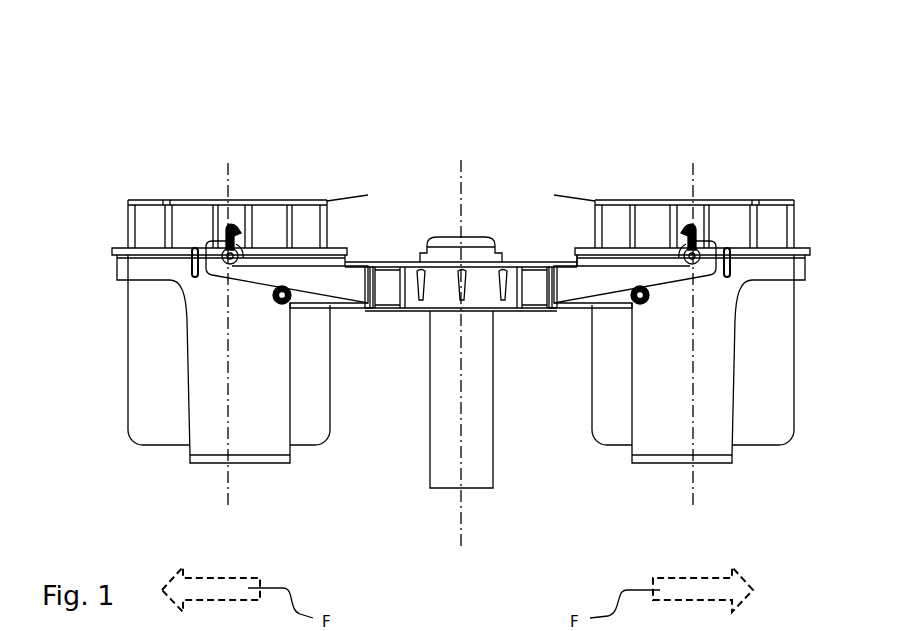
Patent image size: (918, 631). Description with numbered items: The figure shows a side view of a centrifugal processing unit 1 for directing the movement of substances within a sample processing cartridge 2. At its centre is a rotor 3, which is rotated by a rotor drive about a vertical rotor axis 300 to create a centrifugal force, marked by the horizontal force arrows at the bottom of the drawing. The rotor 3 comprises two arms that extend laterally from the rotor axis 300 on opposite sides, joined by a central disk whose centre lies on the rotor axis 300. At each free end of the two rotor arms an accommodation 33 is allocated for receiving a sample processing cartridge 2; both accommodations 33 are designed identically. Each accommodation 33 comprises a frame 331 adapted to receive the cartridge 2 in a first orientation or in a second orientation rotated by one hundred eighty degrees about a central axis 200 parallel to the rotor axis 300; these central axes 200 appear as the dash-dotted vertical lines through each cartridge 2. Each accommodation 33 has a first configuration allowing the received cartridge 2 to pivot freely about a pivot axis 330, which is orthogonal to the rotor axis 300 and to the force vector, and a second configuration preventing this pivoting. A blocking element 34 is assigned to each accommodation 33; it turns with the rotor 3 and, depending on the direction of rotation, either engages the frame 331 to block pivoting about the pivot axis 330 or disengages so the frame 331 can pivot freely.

The centrifugal processing unit 1 is at (137, 88).
The sample processing cartridge 2 is at (138, 367).
The rotor 3 is at (442, 452).
The accommodation 33 is at (272, 173).
The blocking element 34 is at (357, 310).
The central axis 200 is at (228, 170).
The rotor axis 300 is at (462, 538).
The pivot axis 330 is at (683, 258).
The frame 331 is at (203, 446).